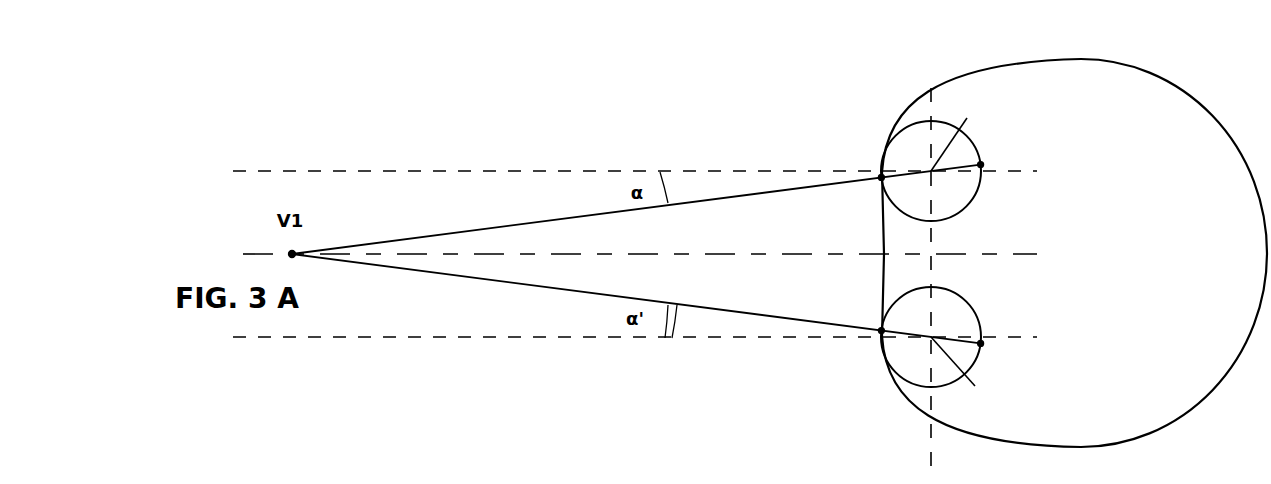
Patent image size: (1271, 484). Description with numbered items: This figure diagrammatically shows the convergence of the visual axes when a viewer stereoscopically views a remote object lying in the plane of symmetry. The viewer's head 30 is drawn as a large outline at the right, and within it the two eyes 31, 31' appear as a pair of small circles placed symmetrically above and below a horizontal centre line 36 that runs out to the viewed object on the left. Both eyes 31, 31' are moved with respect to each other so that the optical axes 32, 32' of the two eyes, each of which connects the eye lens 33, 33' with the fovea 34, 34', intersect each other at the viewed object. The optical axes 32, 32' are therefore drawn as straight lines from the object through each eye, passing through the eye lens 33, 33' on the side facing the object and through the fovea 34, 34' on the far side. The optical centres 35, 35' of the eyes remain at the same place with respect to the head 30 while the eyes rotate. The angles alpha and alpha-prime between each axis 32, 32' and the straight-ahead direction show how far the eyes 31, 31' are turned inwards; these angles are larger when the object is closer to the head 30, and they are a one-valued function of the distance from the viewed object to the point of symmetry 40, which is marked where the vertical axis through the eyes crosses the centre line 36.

The head 30 is at (1150, 264).
The eye 31 is at (955, 171).
The eye 31' is at (954, 337).
The optical axis 32 is at (636, 196).
The optical axis 32' is at (636, 316).
The eye lens 33 is at (858, 144).
The eye lens 33' is at (856, 358).
The fovea 34 is at (1011, 142).
The fovea 34' is at (1013, 361).
The optical centre 35 is at (960, 133).
The optical centre 35' is at (962, 375).
The optical axis / center line 36 is at (791, 252).
The point of symmetry 40 is at (930, 253).